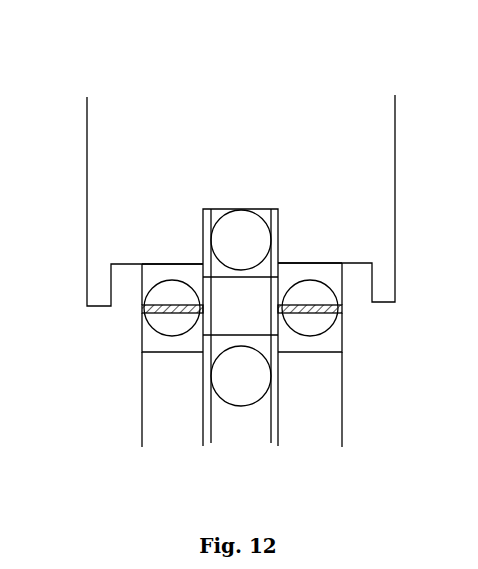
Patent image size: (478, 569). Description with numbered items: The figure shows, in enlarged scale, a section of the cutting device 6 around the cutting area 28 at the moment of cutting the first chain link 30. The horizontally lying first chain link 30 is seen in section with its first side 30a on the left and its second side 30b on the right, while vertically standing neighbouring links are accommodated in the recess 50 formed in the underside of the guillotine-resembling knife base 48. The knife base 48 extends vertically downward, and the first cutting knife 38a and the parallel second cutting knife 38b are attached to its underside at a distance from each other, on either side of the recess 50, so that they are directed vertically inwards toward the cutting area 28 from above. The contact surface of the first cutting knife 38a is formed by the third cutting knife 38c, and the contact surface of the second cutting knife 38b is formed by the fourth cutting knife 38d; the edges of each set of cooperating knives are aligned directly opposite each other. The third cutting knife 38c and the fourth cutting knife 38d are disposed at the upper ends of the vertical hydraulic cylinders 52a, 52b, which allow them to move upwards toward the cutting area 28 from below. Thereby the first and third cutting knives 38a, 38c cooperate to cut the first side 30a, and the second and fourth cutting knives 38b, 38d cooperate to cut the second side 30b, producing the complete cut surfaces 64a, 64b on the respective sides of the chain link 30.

The cutting device 6 is at (219, 132).
The knife base 48 is at (120, 148).
The cutting area 28 is at (294, 246).
The first chain link 30 is at (192, 279).
The recess 50 is at (224, 210).
The first cutting knife 38a is at (157, 275).
The second cutting knife 38b is at (328, 273).
The cut surface 64a is at (142, 311).
The cut surface 64b is at (342, 310).
The first side of the chain link 30a is at (160, 322).
The second side of the chain link 30b is at (320, 318).
The third cutting knife 38c is at (153, 342).
The fourth cutting knife 38d is at (327, 342).
The hydraulic cylinder 52a is at (167, 407).
The hydraulic cylinder 52b is at (325, 407).